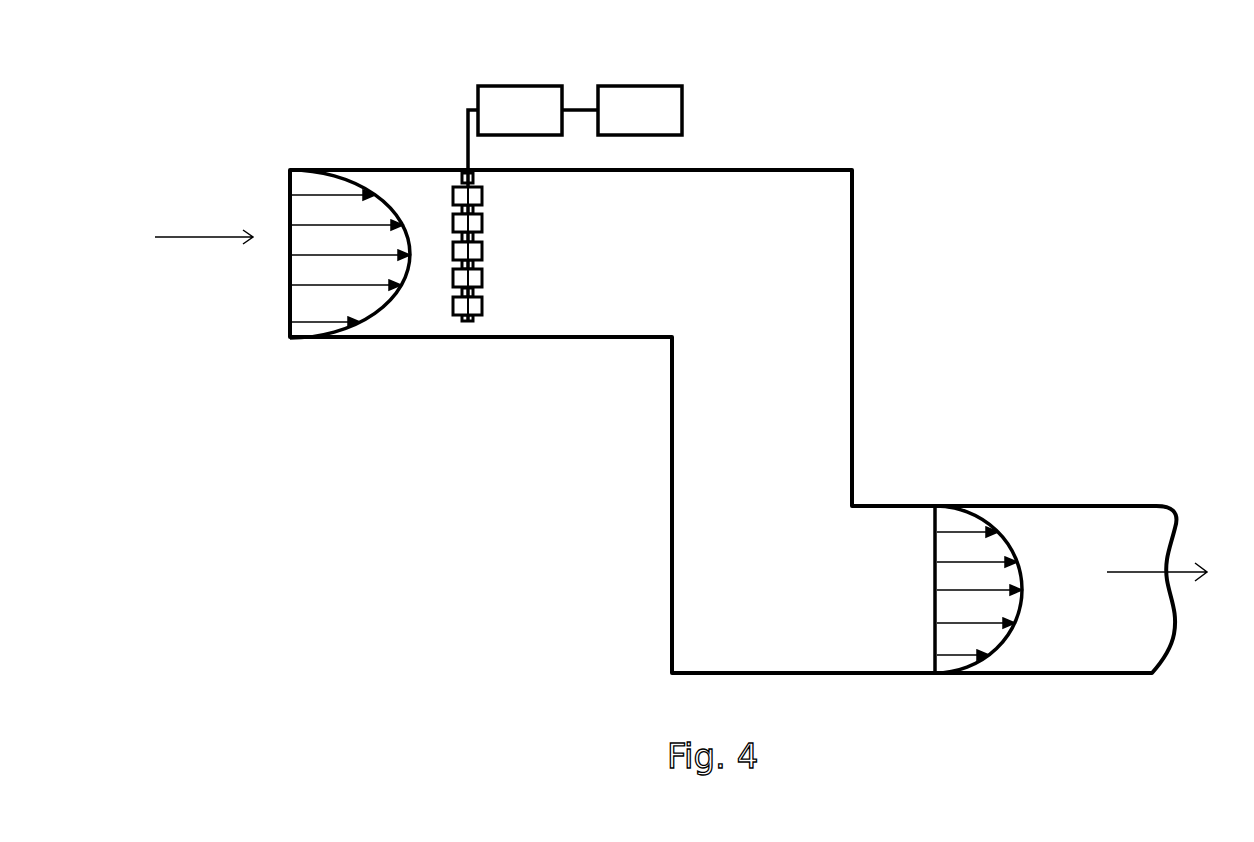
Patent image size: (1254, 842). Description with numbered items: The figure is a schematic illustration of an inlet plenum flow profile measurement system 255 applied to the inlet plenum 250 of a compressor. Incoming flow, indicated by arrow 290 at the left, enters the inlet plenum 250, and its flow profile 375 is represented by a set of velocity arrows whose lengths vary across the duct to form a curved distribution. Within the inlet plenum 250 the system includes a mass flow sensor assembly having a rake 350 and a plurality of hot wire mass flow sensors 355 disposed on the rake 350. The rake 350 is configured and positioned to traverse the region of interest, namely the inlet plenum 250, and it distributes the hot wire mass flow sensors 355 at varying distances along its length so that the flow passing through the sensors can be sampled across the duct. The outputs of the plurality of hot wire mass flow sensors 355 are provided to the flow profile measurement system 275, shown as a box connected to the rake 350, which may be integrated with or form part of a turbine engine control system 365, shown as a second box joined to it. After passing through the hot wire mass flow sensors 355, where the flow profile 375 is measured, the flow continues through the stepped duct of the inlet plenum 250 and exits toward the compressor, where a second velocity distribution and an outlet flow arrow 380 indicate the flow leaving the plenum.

The inlet plenum 250 is at (714, 281).
The inlet plenum flow profile measurement system 255 is at (440, 40).
The flow profile measurement system 275 is at (520, 86).
The turbine engine control system 365 is at (640, 86).
The inlet air flow 290 is at (223, 230).
The flow profile 375 is at (327, 185).
The rake 350 is at (460, 178).
The hot wire mass flow sensors 355 is at (482, 196).
The outlet air flow 380 is at (1138, 571).